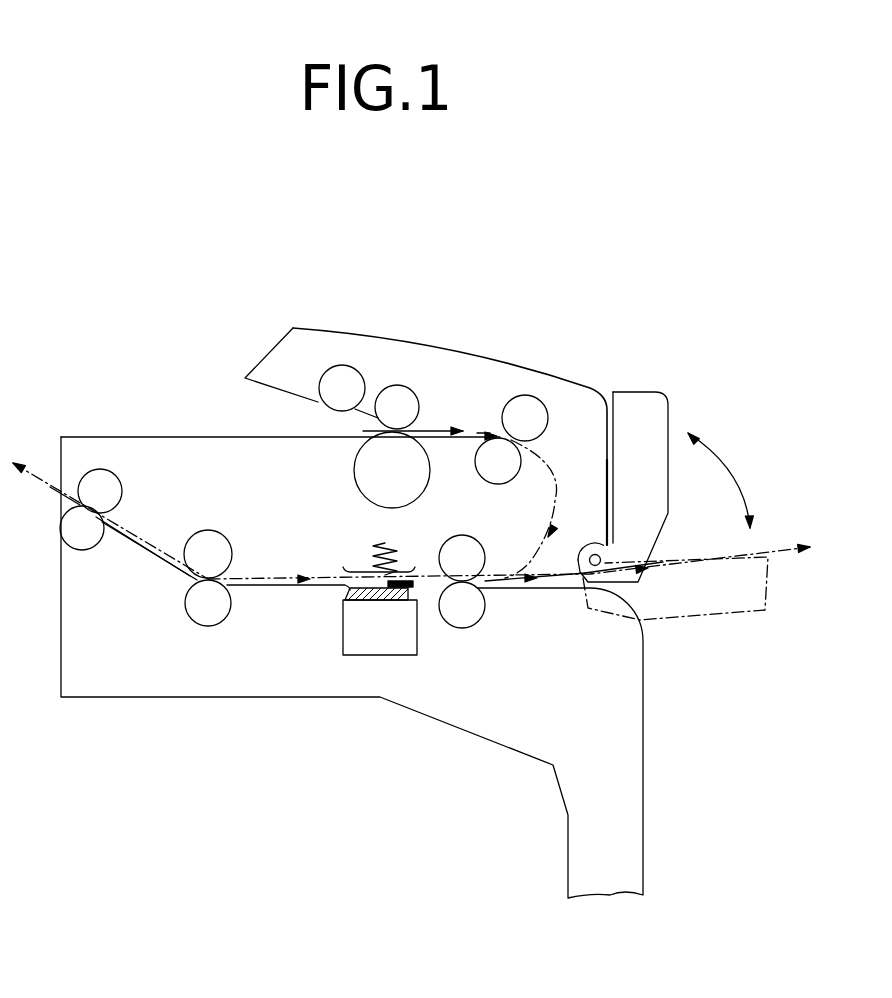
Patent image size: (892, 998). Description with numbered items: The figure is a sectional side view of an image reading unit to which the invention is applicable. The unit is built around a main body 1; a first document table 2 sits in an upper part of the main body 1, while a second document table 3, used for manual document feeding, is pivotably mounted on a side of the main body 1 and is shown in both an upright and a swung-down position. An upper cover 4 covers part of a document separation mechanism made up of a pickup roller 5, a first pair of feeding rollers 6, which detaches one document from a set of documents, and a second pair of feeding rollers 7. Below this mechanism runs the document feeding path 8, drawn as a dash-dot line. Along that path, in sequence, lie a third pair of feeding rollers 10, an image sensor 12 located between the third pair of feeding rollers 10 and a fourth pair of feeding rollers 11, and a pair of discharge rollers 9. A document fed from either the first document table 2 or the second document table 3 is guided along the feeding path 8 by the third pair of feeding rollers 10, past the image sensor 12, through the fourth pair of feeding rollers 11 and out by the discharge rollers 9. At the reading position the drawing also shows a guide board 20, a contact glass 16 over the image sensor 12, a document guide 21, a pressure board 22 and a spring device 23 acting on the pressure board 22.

The main body 1 is at (87, 675).
The first document table 2 is at (198, 437).
The second document table 3 is at (650, 412).
The upper cover 4 is at (463, 348).
The pickup roller 5 is at (337, 378).
The first pair of feeding rollers 6 is at (413, 453).
The second pair of feeding rollers 7 is at (507, 462).
The document feeding path 8 is at (280, 577).
The pair of discharge rollers 9 is at (80, 528).
The third pair of feeding rollers 10 is at (480, 555).
The fourth pair of feeding rollers 11 is at (197, 555).
The image sensor 12 is at (382, 655).
The contact glass 16 is at (363, 600).
The guide board 20 is at (262, 590).
The document guide 21 is at (417, 590).
The pressure board 22 is at (400, 572).
The spring device 23 is at (370, 547).